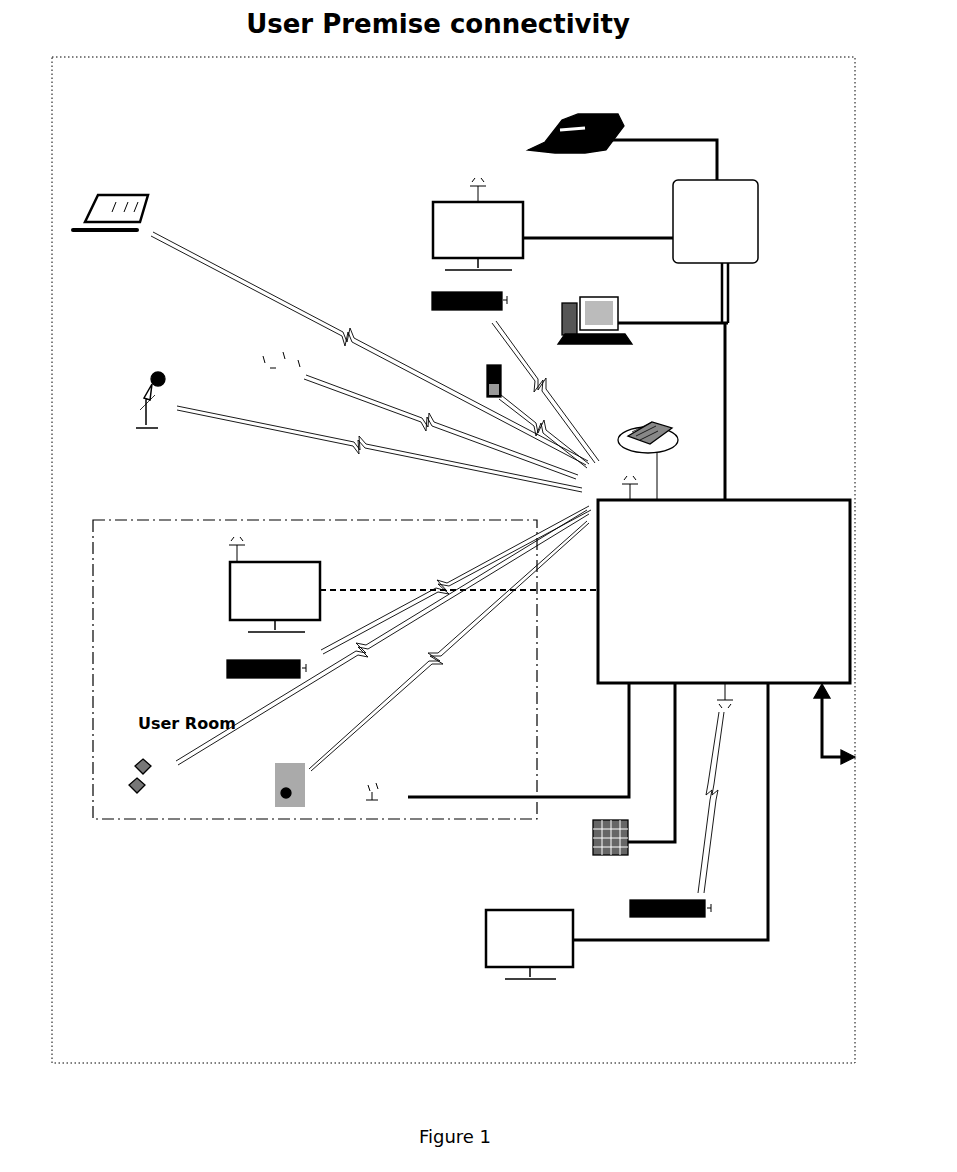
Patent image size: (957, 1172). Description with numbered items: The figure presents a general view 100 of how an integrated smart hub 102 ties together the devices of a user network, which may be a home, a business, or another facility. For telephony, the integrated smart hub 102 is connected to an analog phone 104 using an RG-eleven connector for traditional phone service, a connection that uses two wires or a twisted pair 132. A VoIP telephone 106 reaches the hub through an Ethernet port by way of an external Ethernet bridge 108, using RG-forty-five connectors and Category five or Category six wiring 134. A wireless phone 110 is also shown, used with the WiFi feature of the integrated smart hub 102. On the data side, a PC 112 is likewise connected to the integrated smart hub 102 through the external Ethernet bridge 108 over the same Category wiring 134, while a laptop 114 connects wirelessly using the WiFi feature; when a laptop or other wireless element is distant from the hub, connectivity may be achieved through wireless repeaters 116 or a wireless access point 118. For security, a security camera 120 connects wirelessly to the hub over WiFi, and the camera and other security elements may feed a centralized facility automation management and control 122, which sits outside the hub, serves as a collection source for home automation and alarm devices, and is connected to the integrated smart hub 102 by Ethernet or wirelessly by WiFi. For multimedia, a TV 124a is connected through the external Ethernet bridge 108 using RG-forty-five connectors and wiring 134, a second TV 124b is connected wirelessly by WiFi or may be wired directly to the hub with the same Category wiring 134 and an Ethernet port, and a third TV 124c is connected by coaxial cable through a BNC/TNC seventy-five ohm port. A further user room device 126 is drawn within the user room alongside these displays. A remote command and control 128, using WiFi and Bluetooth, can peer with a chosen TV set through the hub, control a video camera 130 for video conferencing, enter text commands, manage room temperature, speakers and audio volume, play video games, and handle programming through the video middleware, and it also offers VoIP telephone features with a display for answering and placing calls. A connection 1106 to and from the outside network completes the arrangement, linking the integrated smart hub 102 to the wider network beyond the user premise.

The general view 100 is at (830, 460).
The integrated smart hub 102 is at (733, 500).
The analog phone 104 is at (642, 428).
The VoIP telephone 106 is at (540, 147).
The external Ethernet bridge 108 is at (760, 190).
The mobile phone 110 is at (487, 378).
The PC 112 is at (622, 330).
The laptop 114 is at (147, 233).
The wireless repeater 116 is at (257, 370).
The wireless access point 118 is at (372, 792).
The security camera 120 is at (130, 380).
The centralized facility automation management and control 122 is at (593, 832).
The TV 124a is at (433, 232).
The TV 124b is at (228, 597).
The TV 124c is at (486, 945).
The user room device 126 is at (273, 780).
The remote command and control 128 is at (430, 305).
The video camera 130 is at (130, 777).
The twisted pair 132 is at (660, 472).
The CAT-6 or CAT-5 wiring 134 is at (545, 238).
The network connection to/from network 1106 is at (826, 758).